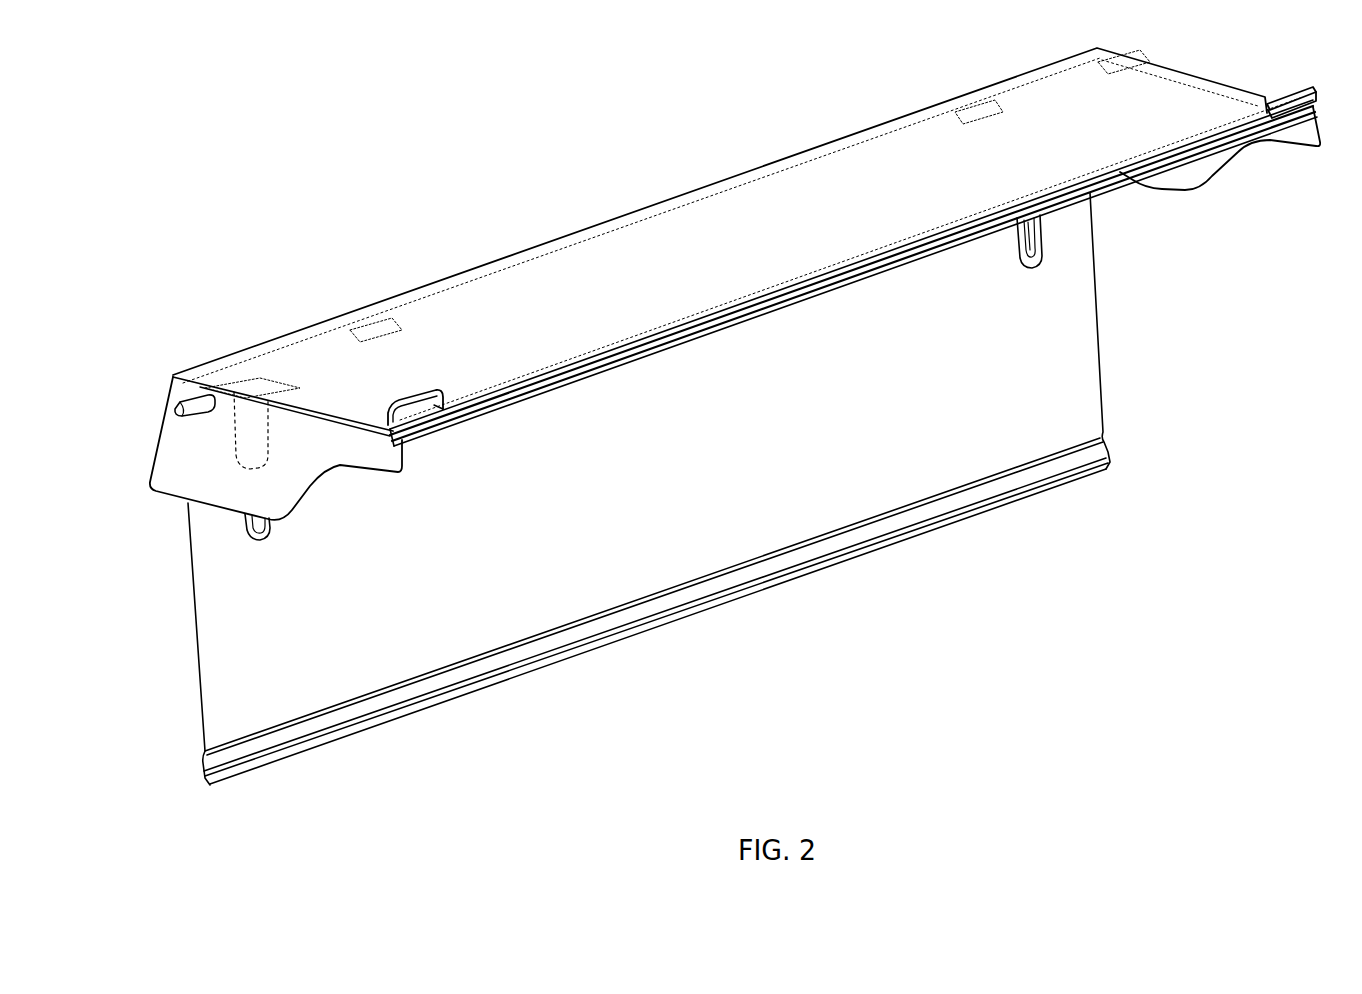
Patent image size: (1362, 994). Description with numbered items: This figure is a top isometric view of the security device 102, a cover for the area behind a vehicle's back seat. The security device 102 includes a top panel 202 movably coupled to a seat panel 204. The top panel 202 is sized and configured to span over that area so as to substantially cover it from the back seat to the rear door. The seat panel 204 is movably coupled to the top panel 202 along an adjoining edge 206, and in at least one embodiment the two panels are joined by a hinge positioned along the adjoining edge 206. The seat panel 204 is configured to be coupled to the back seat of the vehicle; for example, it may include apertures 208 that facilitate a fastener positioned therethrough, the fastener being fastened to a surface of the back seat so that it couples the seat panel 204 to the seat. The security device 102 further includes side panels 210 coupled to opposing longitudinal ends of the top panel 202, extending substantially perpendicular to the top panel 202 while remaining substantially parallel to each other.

The security device 102 is at (350, 174).
The top panel 202 is at (628, 250).
The seat panel 204 is at (612, 567).
The adjoining edge 206 is at (768, 165).
The apertures 208 is at (262, 519).
The side panels 210 is at (160, 437).